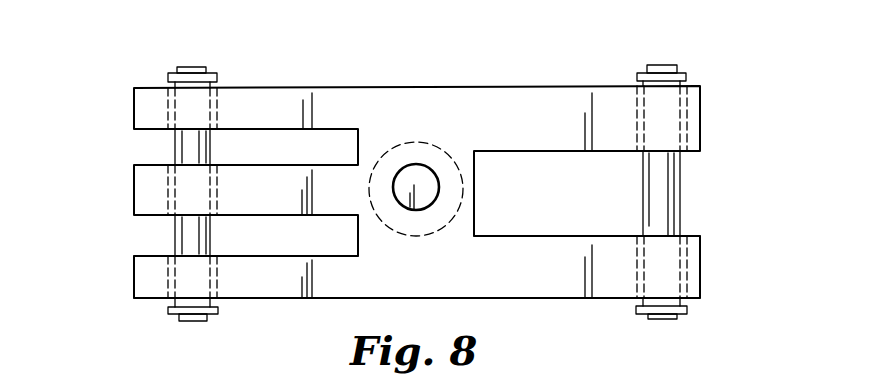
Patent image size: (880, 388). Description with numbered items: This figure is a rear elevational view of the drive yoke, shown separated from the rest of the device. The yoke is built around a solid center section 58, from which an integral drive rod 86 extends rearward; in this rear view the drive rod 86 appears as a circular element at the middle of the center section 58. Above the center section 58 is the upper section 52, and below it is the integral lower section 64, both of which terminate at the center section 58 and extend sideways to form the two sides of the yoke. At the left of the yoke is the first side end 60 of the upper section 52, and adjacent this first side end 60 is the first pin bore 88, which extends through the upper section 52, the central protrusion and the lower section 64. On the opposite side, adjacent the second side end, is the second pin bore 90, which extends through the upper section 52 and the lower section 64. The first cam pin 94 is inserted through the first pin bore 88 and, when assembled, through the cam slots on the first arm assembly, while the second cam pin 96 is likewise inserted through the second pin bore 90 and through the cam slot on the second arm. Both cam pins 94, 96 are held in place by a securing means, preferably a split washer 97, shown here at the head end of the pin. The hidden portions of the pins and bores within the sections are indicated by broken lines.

The upper section 52 is at (303, 100).
The solid center section 58 is at (437, 145).
The first side end 60 is at (134, 275).
The integral lower section 64 is at (525, 285).
The integral drive rod 86 is at (416, 165).
The first pin bore 88 is at (218, 106).
The second pin bore 90 is at (687, 100).
The first cam pin 94 is at (185, 152).
The second cam pin 96 is at (659, 193).
The split washer 97 is at (637, 75).